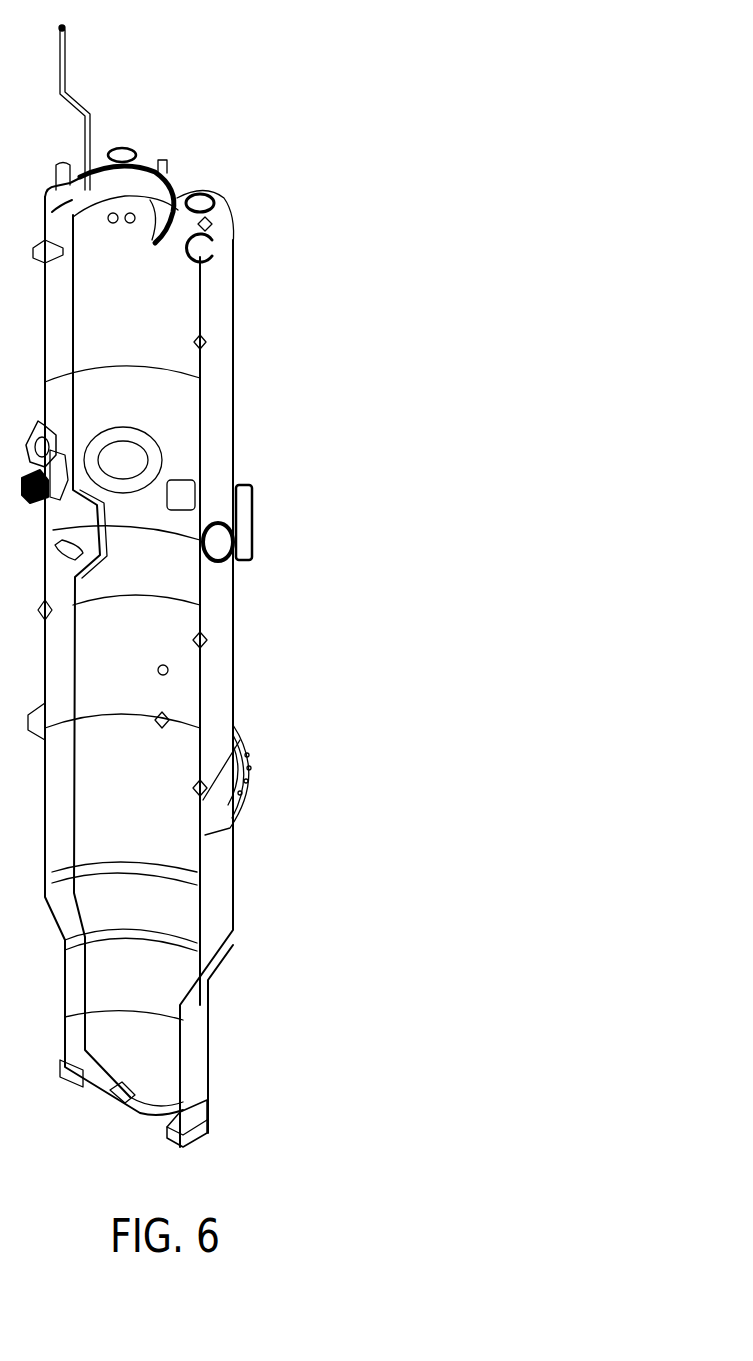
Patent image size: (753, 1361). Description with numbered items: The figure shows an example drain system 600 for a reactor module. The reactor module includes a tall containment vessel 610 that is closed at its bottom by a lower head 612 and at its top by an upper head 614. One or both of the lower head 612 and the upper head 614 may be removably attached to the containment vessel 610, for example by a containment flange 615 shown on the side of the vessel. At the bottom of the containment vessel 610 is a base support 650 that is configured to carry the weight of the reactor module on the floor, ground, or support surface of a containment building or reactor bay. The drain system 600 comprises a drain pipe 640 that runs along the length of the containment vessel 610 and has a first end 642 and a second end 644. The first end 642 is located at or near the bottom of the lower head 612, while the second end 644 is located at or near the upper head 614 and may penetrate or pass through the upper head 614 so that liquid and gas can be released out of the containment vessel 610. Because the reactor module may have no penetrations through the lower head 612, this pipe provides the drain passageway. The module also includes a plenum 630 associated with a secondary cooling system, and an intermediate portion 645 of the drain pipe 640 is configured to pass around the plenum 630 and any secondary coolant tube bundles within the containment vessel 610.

The drain system 600 is at (303, 80).
The containment vessel 610 is at (245, 330).
The lower head 612 is at (140, 1114).
The upper head 614 is at (180, 173).
The containment flange 615 is at (258, 783).
The plenum 630 is at (247, 485).
The drain pipe 640 is at (77, 663).
The first end 642 is at (108, 1070).
The second end 644 is at (65, 60).
The intermediate portion 645 is at (102, 538).
The base support 650 is at (212, 1122).